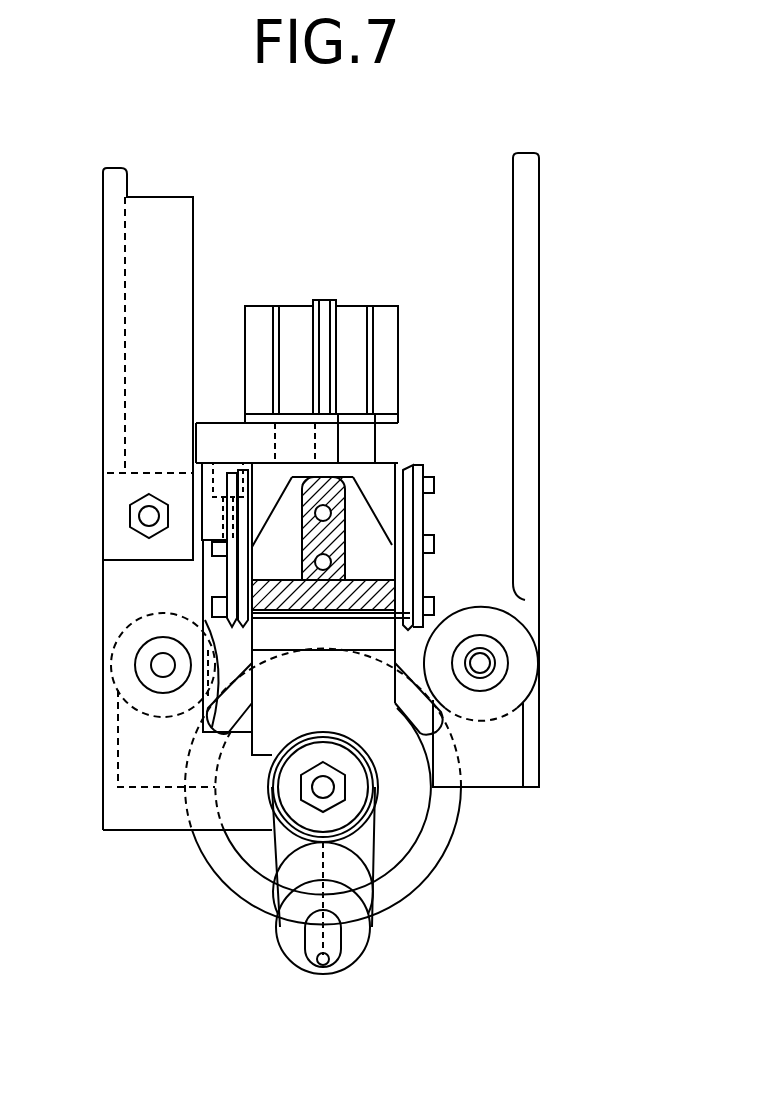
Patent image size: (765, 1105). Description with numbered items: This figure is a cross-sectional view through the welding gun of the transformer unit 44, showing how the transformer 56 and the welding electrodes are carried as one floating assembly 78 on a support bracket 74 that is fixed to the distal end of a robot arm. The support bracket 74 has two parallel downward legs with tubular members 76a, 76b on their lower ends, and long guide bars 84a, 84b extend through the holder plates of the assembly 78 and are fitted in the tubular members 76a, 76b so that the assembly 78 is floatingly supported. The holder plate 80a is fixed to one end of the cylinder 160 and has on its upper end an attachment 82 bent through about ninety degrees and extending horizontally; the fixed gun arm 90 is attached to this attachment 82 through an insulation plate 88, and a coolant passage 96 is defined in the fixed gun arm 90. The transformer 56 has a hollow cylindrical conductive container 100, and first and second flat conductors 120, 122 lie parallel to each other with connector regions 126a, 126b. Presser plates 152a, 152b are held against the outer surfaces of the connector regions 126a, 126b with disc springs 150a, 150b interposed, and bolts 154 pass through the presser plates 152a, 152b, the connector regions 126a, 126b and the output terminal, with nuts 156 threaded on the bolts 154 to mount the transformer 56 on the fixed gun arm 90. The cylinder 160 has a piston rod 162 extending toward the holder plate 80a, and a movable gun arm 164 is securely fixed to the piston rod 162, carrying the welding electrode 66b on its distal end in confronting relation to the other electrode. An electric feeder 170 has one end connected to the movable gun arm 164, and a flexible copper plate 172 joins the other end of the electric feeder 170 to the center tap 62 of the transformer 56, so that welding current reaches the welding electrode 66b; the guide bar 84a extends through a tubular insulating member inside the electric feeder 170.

The transformer unit 44 is at (425, 134).
The transformer 56 is at (335, 290).
The center tap 62 is at (285, 443).
The welding electrode 66b is at (308, 950).
The support bracket 74 is at (527, 262).
The tubular member 76a is at (112, 650).
The tubular member 76b is at (530, 652).
The assembly 78 is at (215, 880).
The holder plate 80a is at (417, 820).
The attachment 82 is at (290, 643).
The guide bar 84a is at (163, 665).
The guide bar 84b is at (480, 663).
The insulation plate 88 is at (338, 617).
The fixed gun arm 90 is at (363, 543).
The coolant passage 96 is at (336, 480).
The conductive container 100 is at (302, 306).
The first flat conductor 120 is at (253, 306).
The second flat conductor 122 is at (386, 306).
The connector region 126a is at (262, 473).
The connector region 126b is at (382, 470).
The disc spring 150a is at (224, 588).
The disc spring 150b is at (430, 482).
The presser plate 152a is at (224, 568).
The presser plate 152b is at (426, 570).
The bolts 154 is at (226, 540).
The nuts 156 is at (440, 616).
The cylinder 160 is at (415, 863).
The piston rod 162 is at (327, 788).
The movable gun arm 164 is at (375, 950).
The electric feeder 170 is at (160, 836).
The flexible copper plate 172 is at (183, 217).